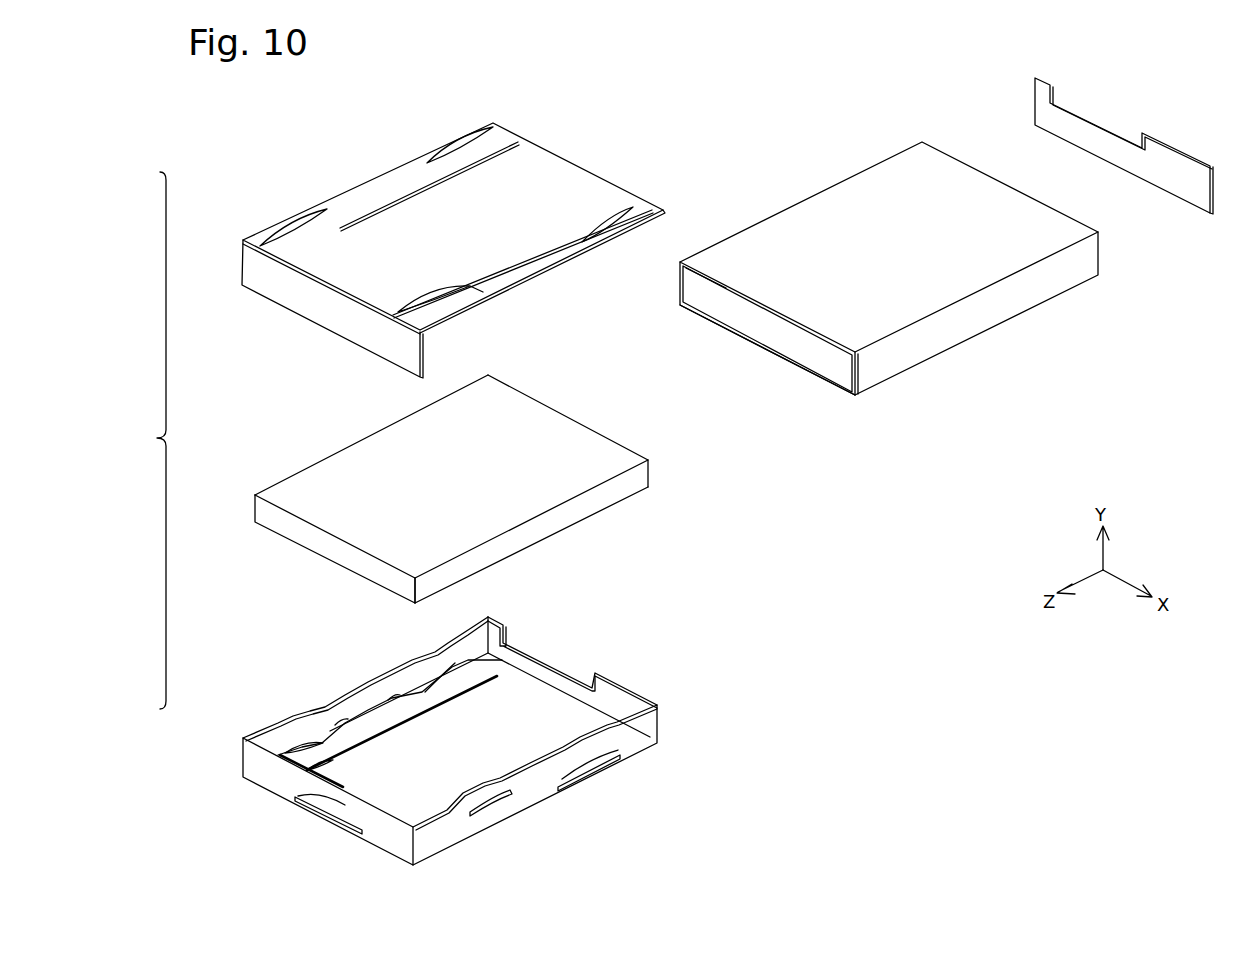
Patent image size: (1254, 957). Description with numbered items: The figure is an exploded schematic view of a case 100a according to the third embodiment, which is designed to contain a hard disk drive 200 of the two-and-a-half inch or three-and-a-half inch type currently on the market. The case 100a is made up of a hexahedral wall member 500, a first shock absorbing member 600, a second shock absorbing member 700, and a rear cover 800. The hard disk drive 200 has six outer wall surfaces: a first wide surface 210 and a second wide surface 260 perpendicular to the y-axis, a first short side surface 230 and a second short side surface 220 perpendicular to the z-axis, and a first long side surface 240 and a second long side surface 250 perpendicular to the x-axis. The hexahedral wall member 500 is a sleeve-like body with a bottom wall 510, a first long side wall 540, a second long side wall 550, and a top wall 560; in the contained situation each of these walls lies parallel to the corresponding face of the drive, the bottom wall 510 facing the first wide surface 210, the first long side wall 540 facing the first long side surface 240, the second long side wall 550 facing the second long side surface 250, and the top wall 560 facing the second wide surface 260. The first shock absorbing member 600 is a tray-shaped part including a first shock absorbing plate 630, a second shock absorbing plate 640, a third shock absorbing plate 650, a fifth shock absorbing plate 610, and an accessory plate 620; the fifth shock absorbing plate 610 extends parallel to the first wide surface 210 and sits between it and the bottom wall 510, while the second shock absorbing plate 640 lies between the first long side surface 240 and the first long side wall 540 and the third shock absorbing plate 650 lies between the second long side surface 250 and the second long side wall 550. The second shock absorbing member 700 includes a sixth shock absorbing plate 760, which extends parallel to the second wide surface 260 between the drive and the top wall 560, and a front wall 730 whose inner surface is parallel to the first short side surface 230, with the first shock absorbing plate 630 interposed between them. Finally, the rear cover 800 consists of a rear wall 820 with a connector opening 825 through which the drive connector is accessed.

The case 100a is at (138, 440).
The second shock absorbing member 700 is at (423, 239).
The sixth shock absorbing plate 760 is at (543, 158).
The front wall 730 is at (290, 302).
The hexahedral wall member 500 is at (853, 280).
The top wall 560 is at (860, 185).
The first long side wall 540 is at (680, 288).
The bottom wall 510 is at (805, 363).
The second long side wall 550 is at (950, 343).
The rear cover 800 is at (1092, 148).
The connector opening 825 is at (1075, 112).
The rear wall 820 is at (1172, 190).
The hard disk drive 200 is at (445, 485).
The second short side surface 220 is at (548, 412).
The first long side surface 240 is at (305, 467).
The second wide surface 260 is at (590, 460).
The second long side surface 250 is at (598, 505).
The first short side surface 230 is at (318, 545).
The first wide surface 210 is at (525, 550).
The first shock absorbing member 600 is at (431, 741).
The second shock absorbing plate 640 is at (390, 668).
The fifth shock absorbing plate 610 is at (537, 702).
The accessory plate 620 is at (620, 683).
The first shock absorbing plate 630 is at (285, 783).
The third shock absorbing plate 650 is at (535, 790).